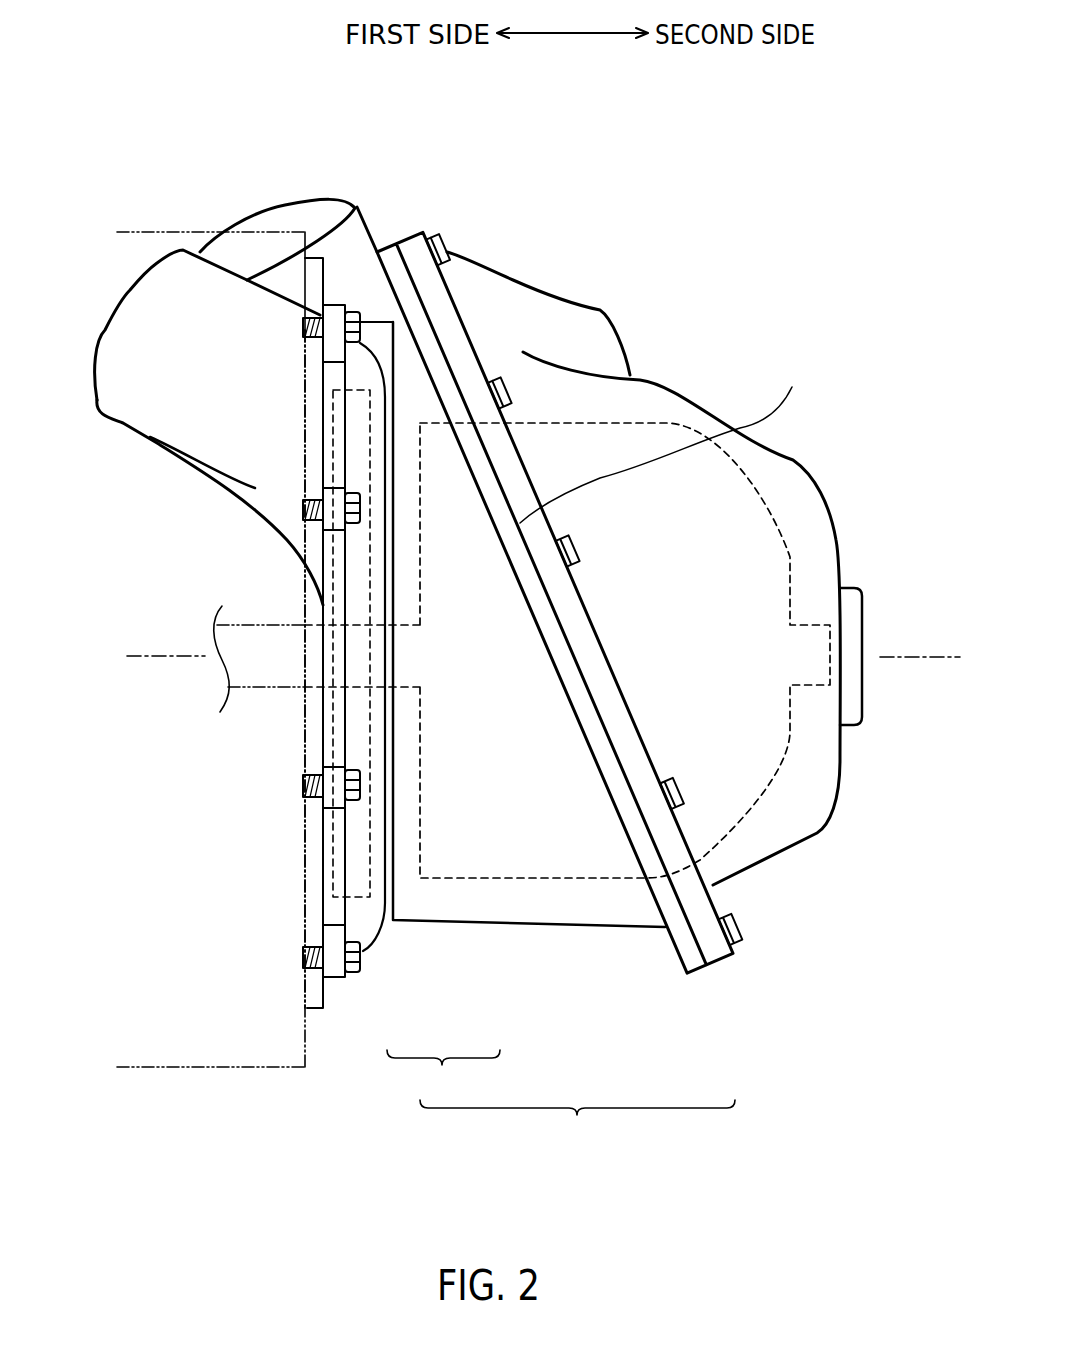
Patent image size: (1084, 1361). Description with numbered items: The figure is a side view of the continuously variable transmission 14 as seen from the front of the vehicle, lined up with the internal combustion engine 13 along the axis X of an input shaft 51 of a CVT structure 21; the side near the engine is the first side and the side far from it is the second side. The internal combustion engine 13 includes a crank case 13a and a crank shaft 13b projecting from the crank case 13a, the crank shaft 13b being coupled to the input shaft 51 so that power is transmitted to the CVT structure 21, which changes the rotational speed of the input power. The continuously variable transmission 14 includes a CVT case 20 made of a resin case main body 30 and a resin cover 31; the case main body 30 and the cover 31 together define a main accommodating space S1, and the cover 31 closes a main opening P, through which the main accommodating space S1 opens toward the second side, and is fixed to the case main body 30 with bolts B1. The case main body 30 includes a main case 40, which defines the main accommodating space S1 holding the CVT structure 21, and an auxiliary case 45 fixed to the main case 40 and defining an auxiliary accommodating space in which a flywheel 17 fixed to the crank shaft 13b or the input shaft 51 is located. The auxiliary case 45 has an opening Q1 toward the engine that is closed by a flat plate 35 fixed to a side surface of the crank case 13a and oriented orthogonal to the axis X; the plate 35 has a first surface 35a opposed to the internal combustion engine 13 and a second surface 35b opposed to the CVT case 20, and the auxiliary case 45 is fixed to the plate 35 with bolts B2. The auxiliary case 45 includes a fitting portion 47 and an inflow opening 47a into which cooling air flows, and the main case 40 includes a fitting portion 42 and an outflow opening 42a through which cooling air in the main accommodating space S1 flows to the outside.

The internal combustion engine 13 is at (142, 229).
The crank case 13a is at (193, 1068).
The crank shaft 13b is at (257, 687).
The continuously variable transmission 14 is at (741, 343).
The flywheel 17 is at (333, 728).
The CVT case 20 is at (577, 1126).
The CVT structure 21 is at (790, 556).
The case main body 30 is at (443, 1078).
The cover 31 is at (740, 945).
The plate 35 is at (313, 1012).
The first surface 35a is at (297, 270).
The second surface 35b is at (337, 267).
The main case 40 is at (477, 923).
The fitting portion 42 is at (360, 253).
The outflow opening 42a is at (233, 250).
The auxiliary case 45 is at (383, 950).
The fitting portion 47 is at (157, 432).
The inflow opening 47a is at (125, 297).
The input shaft 51 is at (808, 622).
The bolts B1 is at (433, 237).
The bolts B2 is at (362, 953).
The main opening P is at (661, 436).
The opening Q1 is at (325, 860).
The main accommodating space S1 is at (353, 913).
The axis X is at (930, 658).